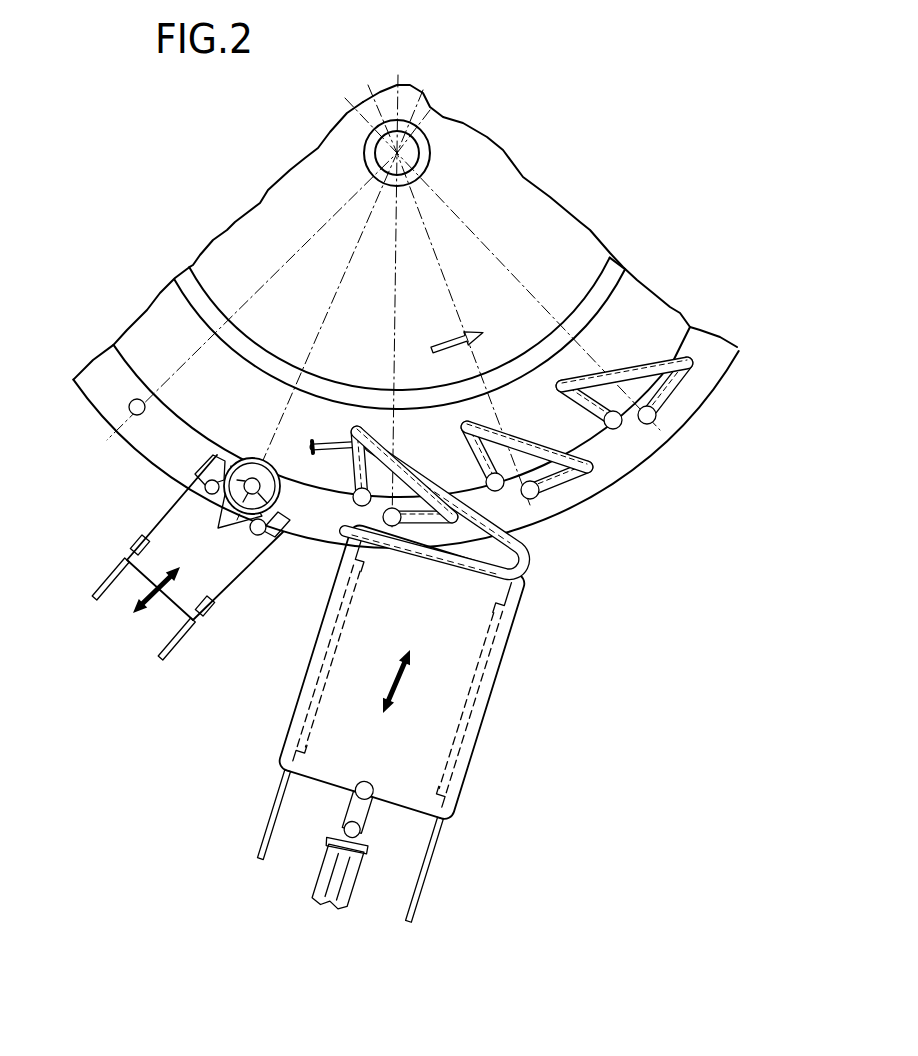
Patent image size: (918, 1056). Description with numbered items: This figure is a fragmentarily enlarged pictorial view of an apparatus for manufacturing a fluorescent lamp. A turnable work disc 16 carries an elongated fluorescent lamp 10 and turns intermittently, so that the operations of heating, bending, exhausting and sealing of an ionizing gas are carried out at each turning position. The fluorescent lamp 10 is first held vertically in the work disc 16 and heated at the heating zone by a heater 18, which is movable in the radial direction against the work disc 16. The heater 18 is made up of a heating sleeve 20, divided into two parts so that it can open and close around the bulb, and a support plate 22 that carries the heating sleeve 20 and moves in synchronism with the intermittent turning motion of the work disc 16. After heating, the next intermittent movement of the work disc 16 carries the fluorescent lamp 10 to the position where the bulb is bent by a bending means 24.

The work disc 16 is at (503, 187).
The fluorescent lamp 10 is at (128, 409).
The heating sleeve 20 is at (203, 489).
The support plate 22 is at (157, 562).
The heater 18 is at (248, 580).
The bending means 24 is at (290, 697).